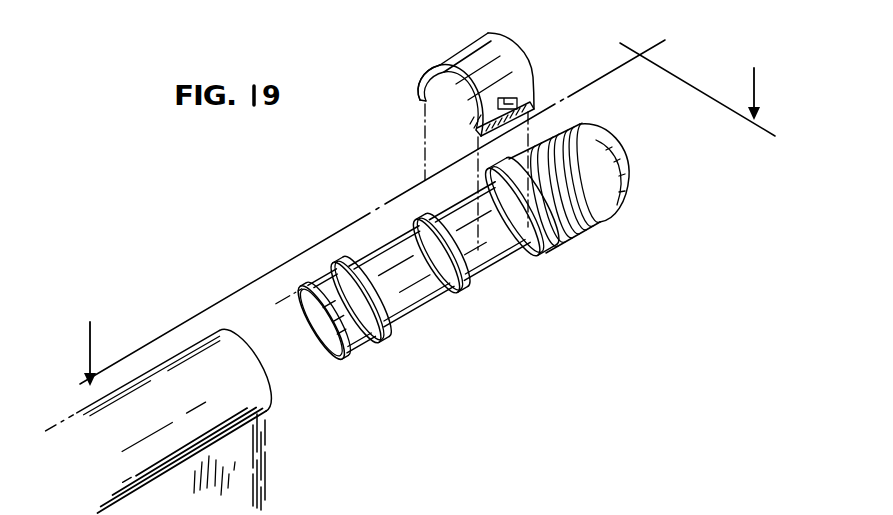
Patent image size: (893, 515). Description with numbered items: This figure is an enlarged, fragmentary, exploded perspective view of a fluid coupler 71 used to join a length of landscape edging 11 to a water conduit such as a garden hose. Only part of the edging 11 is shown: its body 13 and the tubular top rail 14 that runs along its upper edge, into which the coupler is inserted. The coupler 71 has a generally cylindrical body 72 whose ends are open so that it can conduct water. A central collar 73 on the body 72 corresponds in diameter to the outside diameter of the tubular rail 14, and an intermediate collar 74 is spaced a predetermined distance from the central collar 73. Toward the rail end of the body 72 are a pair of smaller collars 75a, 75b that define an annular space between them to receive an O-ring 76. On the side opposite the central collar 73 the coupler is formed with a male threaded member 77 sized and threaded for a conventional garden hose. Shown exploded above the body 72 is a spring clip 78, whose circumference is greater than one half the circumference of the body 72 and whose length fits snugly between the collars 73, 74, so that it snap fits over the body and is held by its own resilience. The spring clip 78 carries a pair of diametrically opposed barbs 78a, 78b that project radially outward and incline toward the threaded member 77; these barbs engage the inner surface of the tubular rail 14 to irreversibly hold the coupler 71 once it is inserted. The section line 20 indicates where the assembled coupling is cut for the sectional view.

The landscape edging 11 is at (138, 305).
The body 13 is at (246, 475).
The top rail 14 is at (167, 352).
The section line 20- 20 is at (421, 214).
The fluid coupler 71 is at (356, 206).
The body 72 is at (440, 318).
The central collar 73 is at (549, 252).
The intermediate collar 74 is at (470, 286).
The smaller collar 75a is at (368, 350).
The smaller collar 75b is at (402, 318).
The O-ring 76 is at (382, 342).
The male threaded member 77 is at (603, 216).
The spring clip 78 is at (442, 50).
The barb 78a is at (503, 97).
The barb 78b is at (425, 82).